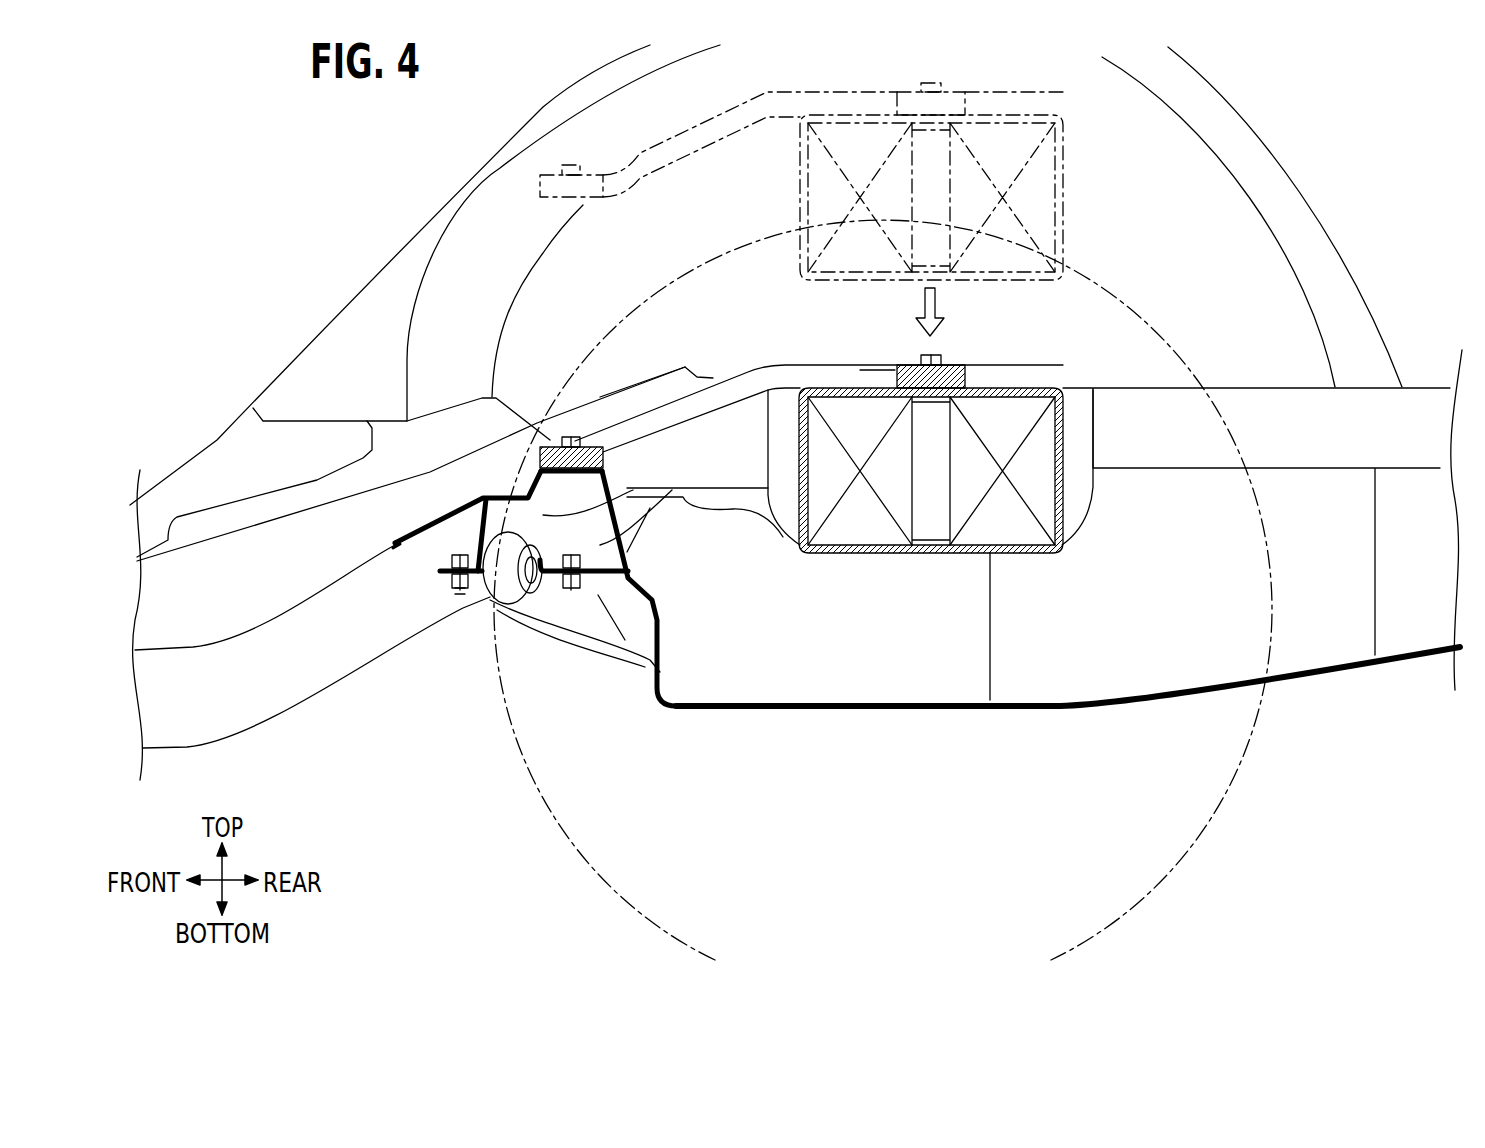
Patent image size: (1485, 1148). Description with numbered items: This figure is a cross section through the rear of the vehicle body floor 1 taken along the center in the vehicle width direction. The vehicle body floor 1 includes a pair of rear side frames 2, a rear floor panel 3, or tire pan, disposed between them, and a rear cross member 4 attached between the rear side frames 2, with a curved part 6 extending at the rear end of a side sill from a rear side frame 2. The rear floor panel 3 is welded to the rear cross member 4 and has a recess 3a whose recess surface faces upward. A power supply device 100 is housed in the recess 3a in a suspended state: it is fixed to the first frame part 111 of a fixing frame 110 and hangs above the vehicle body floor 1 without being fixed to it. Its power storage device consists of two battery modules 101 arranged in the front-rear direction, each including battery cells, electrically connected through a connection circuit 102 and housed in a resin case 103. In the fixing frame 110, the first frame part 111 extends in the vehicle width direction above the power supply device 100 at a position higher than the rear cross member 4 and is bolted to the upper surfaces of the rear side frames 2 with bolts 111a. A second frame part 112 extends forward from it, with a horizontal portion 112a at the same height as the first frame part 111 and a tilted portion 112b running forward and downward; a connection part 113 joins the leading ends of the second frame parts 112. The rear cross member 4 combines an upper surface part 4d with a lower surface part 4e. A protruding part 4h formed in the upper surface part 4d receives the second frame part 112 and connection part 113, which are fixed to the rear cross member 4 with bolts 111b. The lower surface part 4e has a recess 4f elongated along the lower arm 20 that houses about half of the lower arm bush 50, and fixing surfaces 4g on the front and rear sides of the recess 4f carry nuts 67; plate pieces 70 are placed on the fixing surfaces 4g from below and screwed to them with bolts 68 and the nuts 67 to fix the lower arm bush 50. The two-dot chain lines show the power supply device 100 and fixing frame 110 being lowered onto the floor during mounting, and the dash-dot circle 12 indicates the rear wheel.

The vehicle body floor 1 is at (1068, 705).
The rear side frame 2 is at (1265, 400).
The rear floor panel 3 is at (869, 734).
The recess 3a is at (890, 708).
The rear cross member 4 is at (540, 534).
The upper surface part 4d is at (397, 537).
The lower surface part 4e is at (392, 552).
The recess 4f is at (655, 520).
The fixing surface 4g is at (443, 573).
The protruding part 4h is at (600, 455).
The curved part 6 is at (252, 556).
The wheel 12 is at (1253, 735).
The lower arm 20 is at (585, 615).
The lower arm bush 50 is at (520, 612).
The nut 67 is at (448, 560).
The bolt 68 is at (463, 598).
The plate piece 70 is at (452, 588).
The power supply device 100 is at (967, 544).
The battery module 101 is at (857, 517).
The connection circuit 102 is at (928, 517).
The case 103 is at (1072, 505).
The fixing frame 110 is at (780, 384).
The first frame part 111 is at (967, 380).
The bolt 111a is at (942, 357).
The bolt 111b is at (571, 436).
The second frame part 112 is at (802, 366).
The horizontal portion 112a is at (868, 373).
The tilted portion 112b is at (683, 410).
The connection part 113 is at (548, 444).